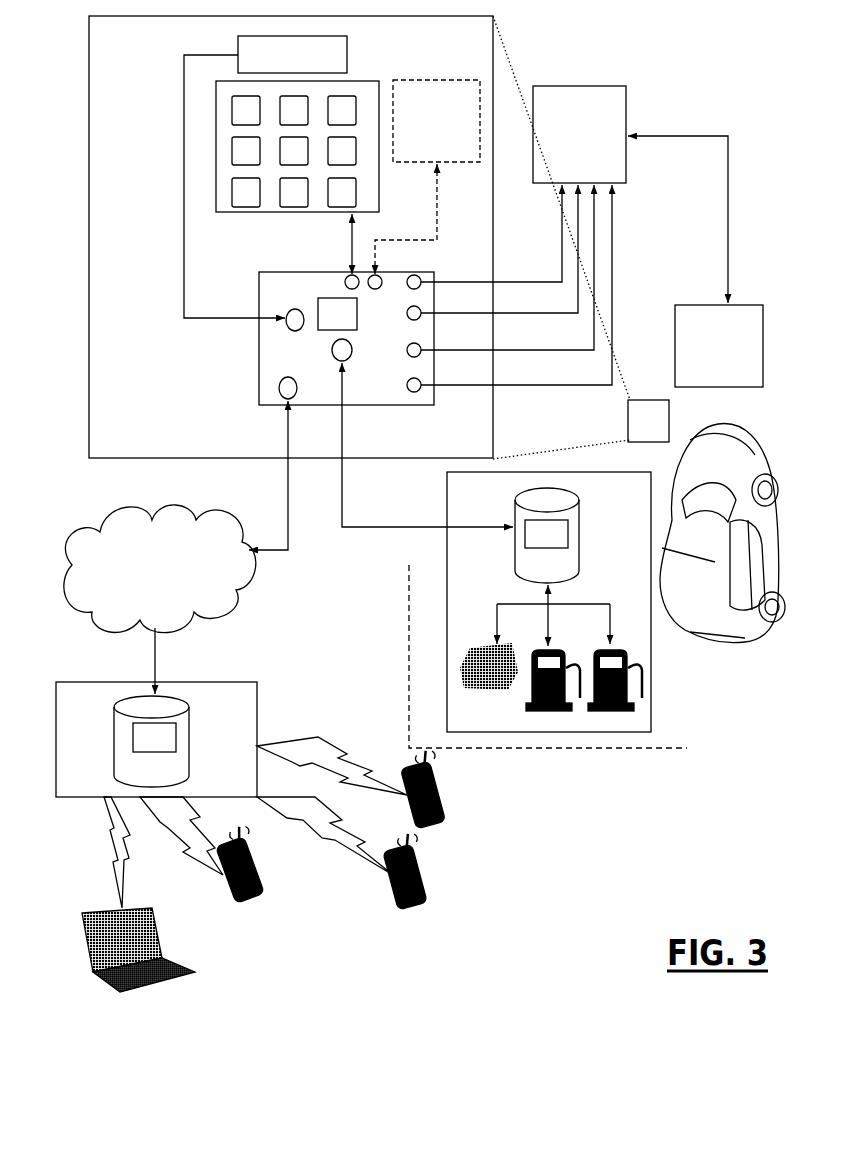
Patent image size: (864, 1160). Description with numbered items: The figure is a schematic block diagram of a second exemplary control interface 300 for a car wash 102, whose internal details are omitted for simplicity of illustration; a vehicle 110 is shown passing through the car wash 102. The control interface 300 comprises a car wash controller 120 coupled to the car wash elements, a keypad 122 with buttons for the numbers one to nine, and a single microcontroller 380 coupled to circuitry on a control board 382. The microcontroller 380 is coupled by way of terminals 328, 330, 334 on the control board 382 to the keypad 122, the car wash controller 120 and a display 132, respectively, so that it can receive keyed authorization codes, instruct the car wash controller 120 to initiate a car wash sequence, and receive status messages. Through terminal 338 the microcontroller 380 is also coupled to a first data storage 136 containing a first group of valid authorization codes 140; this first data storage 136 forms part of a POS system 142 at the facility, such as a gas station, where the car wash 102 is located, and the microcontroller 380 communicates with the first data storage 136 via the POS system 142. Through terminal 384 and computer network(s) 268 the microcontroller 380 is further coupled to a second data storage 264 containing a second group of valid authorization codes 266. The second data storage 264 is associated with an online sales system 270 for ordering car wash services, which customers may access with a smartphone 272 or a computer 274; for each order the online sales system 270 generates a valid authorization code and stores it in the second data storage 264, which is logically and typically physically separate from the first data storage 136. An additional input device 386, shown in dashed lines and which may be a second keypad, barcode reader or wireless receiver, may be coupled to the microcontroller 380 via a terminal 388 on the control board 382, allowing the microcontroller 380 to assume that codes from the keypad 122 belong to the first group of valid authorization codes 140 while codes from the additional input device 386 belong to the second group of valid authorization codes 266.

The car wash 102 is at (719, 346).
The vehicle 110 is at (722, 533).
The car wash controller 120 is at (579, 134).
The keypad 122 is at (242, 214).
The display 132 is at (292, 54).
The first data storage 136 is at (547, 535).
The first group of valid authorization codes 140 is at (546, 534).
The POS system 142 is at (549, 602).
The second data storage 264 is at (151, 741).
The second group of valid authorization codes 266 is at (154, 737).
The computer network(s) 268 is at (160, 569).
The online sales system 270 is at (156, 739).
The smartphone 272 is at (440, 802).
The computer 274 is at (167, 960).
The control interface 300 is at (581, 237).
The terminal 328 is at (345, 283).
The terminals 330 is at (421, 281).
The terminal 334 is at (291, 323).
The terminal 338 is at (338, 350).
The microcontroller 380 is at (337, 314).
The control board 382 is at (346, 338).
The terminal 384 is at (289, 392).
The additional input device 386 is at (436, 121).
The terminal 388 is at (375, 290).